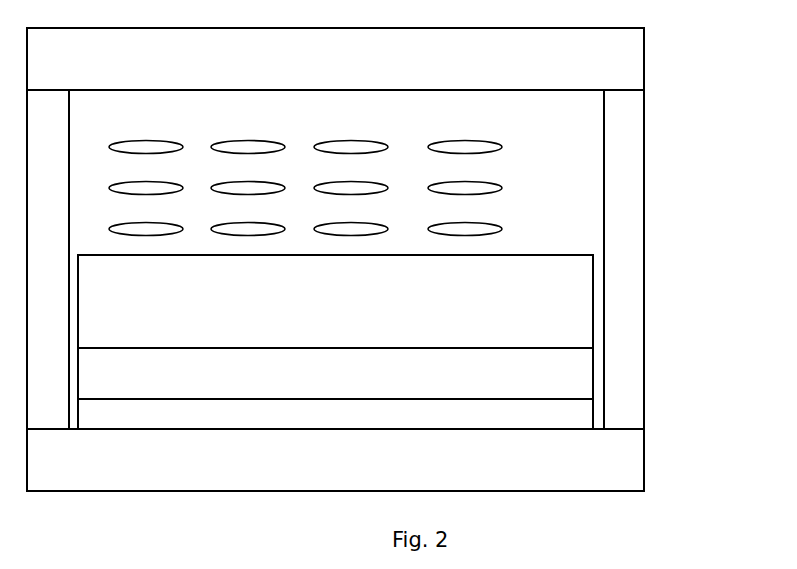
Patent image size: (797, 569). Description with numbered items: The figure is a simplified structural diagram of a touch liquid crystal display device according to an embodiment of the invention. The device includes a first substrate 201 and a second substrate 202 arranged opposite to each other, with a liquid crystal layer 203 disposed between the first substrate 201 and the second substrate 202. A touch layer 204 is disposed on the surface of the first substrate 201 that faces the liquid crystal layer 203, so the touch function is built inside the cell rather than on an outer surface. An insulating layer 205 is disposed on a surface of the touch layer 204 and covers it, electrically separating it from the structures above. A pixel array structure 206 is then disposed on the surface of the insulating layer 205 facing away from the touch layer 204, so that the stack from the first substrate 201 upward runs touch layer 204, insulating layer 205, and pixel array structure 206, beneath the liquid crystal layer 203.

The first substrate 201 is at (605, 467).
The second substrate 202 is at (605, 57).
The liquid crystal layer 203 is at (503, 184).
The touch layer 204 is at (578, 417).
The insulating layer 205 is at (575, 380).
The pixel array structure 206 is at (579, 303).